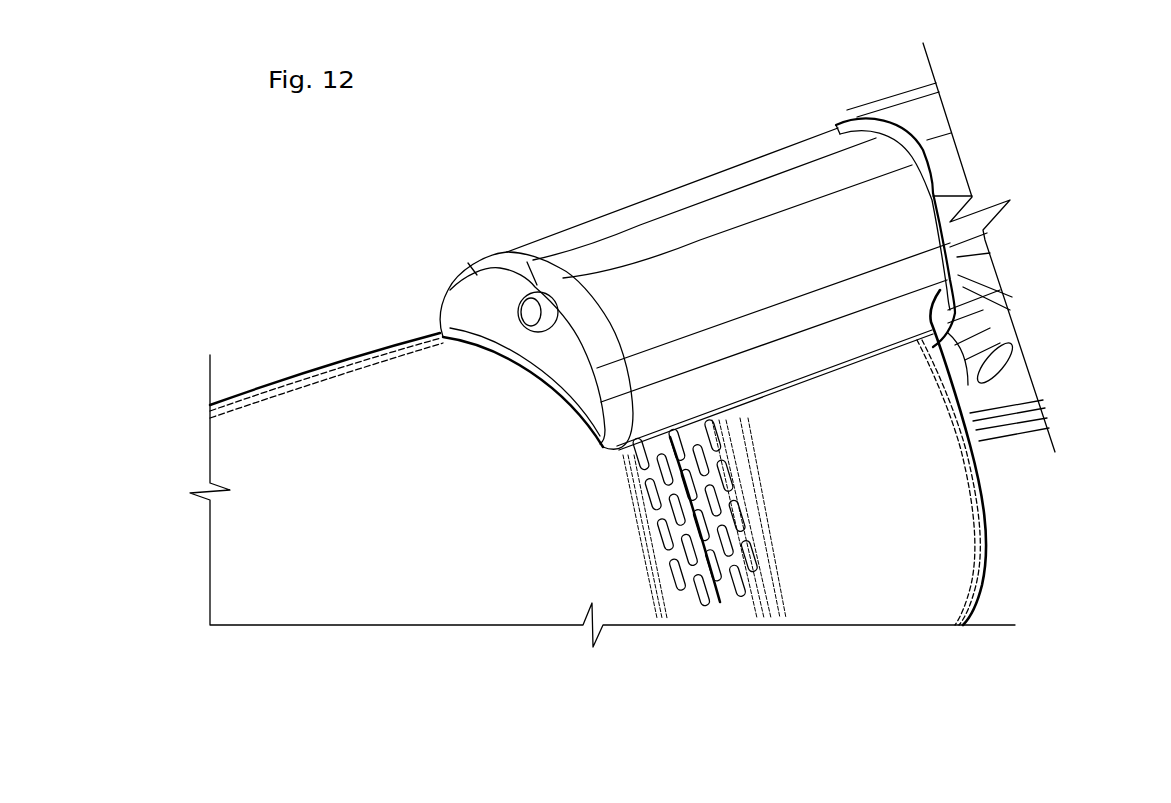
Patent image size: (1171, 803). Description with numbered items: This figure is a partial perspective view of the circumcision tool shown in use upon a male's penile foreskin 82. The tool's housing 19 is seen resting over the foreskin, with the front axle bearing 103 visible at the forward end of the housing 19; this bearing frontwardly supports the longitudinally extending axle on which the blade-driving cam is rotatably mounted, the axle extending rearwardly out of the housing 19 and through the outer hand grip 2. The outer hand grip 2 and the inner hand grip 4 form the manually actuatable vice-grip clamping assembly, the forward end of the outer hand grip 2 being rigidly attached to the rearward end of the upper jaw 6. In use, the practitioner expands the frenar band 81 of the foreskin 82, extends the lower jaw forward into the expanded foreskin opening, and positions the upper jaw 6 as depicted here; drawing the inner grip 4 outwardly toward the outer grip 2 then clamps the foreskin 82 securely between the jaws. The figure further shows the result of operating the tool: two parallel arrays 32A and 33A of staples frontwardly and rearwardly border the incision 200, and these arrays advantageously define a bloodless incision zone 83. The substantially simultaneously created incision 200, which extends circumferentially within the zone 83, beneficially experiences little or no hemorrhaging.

The outer hand grip 2 is at (915, 120).
The inner hand grip 4 is at (1007, 383).
The upper jaw 6 is at (835, 357).
The housing 19 is at (627, 213).
The parallel array of staples 32A is at (672, 535).
The parallel array of staples 33A is at (732, 515).
The frenar band 81 is at (990, 470).
The penile foreskin 82 is at (893, 584).
The bloodless incision zone 83 is at (713, 590).
The front axle bearing 103 is at (530, 315).
The incision 200 is at (692, 498).